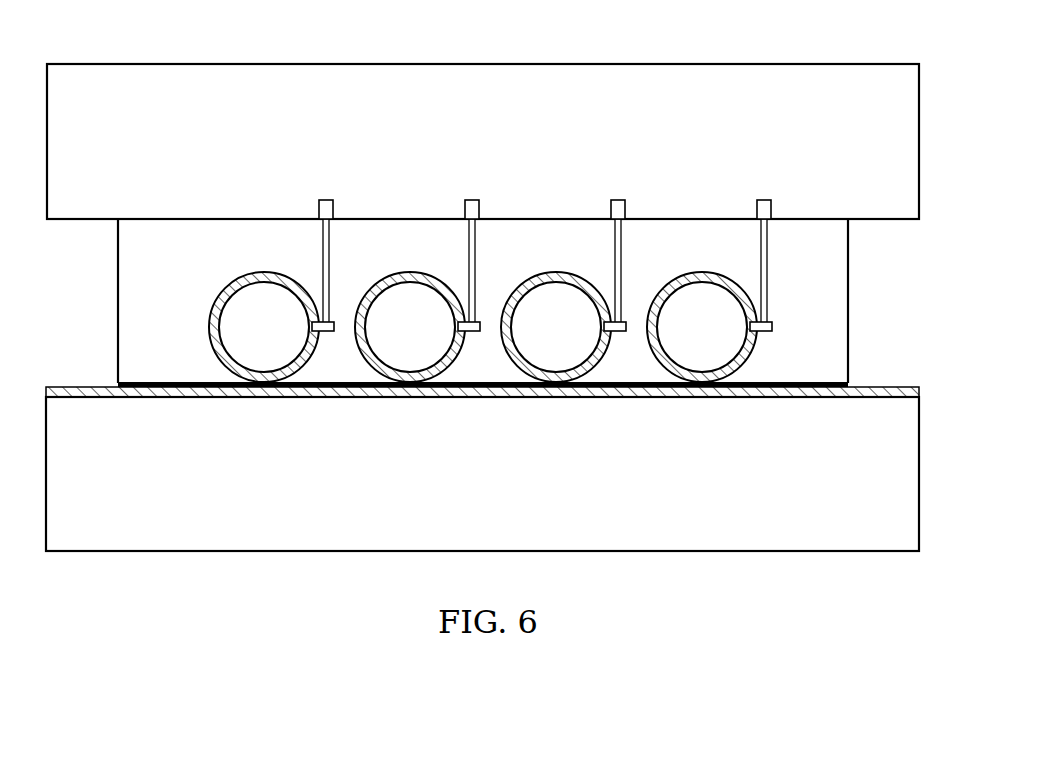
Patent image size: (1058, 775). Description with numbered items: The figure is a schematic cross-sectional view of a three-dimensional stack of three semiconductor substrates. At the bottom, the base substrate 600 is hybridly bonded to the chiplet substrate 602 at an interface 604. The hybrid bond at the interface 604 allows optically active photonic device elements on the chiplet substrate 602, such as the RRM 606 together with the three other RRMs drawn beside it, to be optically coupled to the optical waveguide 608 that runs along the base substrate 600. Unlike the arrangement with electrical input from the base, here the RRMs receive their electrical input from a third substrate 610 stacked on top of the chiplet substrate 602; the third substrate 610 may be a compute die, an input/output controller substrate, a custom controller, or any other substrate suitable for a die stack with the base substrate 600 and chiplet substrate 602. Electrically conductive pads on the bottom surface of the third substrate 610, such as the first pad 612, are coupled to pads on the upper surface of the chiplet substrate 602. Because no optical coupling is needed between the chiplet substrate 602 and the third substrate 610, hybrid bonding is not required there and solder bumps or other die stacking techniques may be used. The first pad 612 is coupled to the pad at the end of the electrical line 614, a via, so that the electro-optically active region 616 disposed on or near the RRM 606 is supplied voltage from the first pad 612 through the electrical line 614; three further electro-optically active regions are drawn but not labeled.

The base substrate 600 is at (745, 552).
The chiplet substrate 602 is at (849, 318).
The interface 604 is at (118, 385).
The RRM 606 is at (262, 272).
The optical waveguide 608 is at (860, 386).
The third substrate 610 is at (797, 63).
The first pad 612 is at (325, 200).
The electrical line 614 is at (336, 245).
The electro-optically active region 616 is at (325, 333).